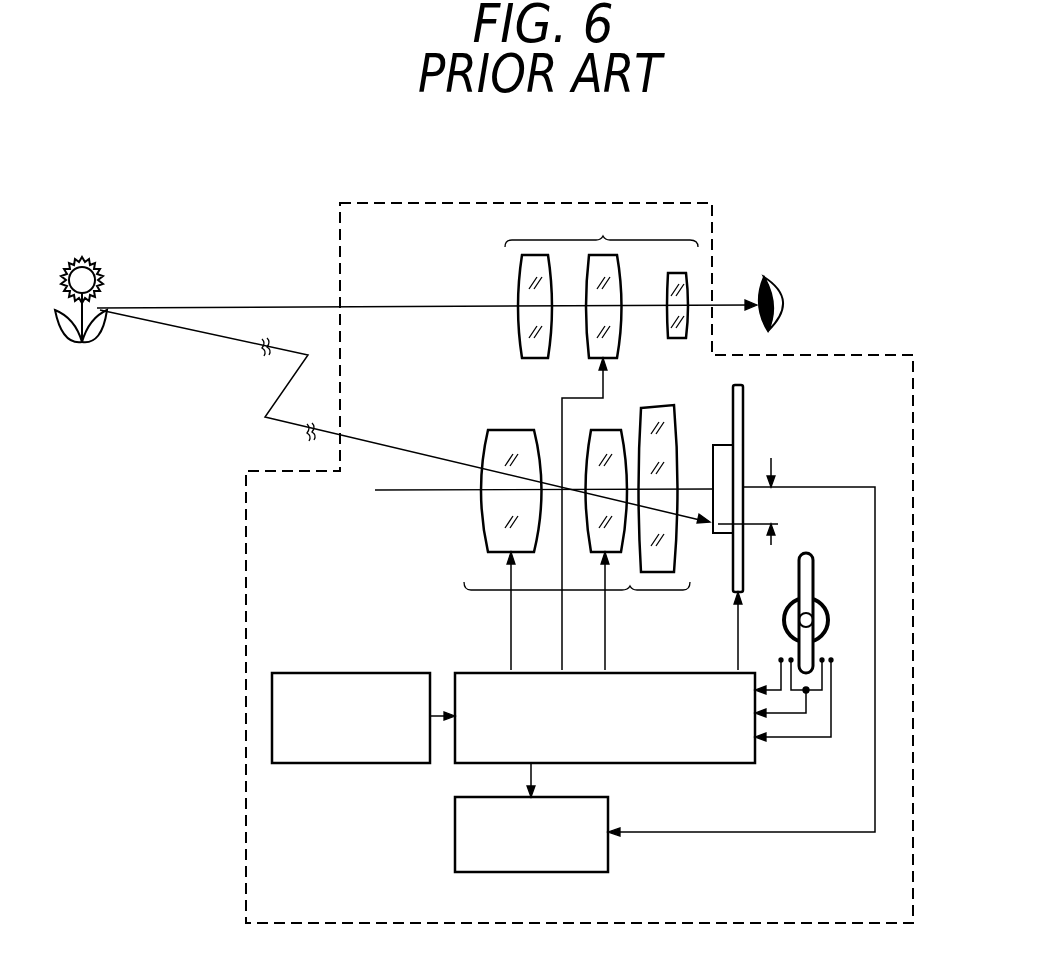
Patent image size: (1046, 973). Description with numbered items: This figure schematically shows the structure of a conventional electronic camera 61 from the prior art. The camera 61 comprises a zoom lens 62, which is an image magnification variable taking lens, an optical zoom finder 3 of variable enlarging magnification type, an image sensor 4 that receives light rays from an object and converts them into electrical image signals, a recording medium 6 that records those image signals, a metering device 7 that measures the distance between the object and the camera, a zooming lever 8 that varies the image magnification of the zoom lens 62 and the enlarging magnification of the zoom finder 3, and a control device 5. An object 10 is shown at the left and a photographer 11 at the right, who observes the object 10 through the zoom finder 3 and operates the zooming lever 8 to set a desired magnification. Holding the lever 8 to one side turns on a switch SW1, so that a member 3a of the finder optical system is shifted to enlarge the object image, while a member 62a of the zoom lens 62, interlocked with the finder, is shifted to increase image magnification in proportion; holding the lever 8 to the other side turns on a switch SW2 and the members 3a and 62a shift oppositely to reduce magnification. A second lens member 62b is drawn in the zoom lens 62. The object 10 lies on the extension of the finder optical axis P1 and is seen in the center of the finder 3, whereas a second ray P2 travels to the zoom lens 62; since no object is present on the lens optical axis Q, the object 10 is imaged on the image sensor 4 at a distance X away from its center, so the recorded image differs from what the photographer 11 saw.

The conventional electronic camera 61 is at (396, 197).
The object 10 is at (82, 362).
The optical axis of the zoom finder P1 is at (209, 307).
The light ray to taking lens P2 is at (210, 335).
The optical zoom finder 3 is at (597, 230).
The member of the finder optical system 3a is at (622, 262).
The photographer 11 is at (792, 276).
The zoom lens 62 is at (620, 619).
The front taking lens element 62b is at (509, 429).
The member of the zoom lens optical system 62a is at (606, 429).
The optical axis of the zoom lens Q is at (414, 493).
The image sensor 4 is at (744, 408).
The distance from sensor center X is at (749, 501).
The zooming lever 8 is at (808, 556).
The switch SW1 is at (833, 646).
The switch SW2 is at (778, 646).
The control device 5 is at (480, 673).
The metering device 7 is at (302, 673).
The recording medium 6 is at (565, 872).